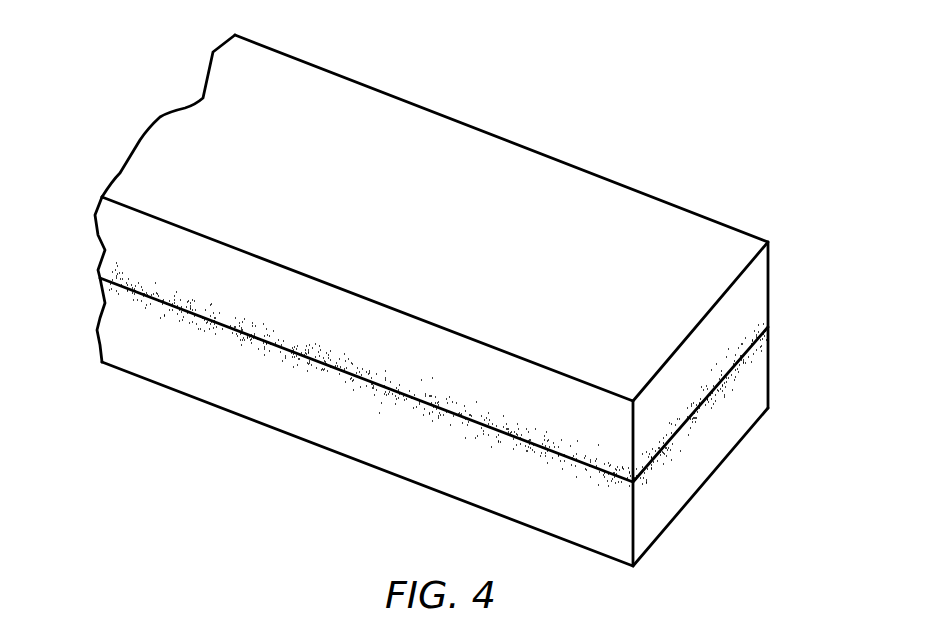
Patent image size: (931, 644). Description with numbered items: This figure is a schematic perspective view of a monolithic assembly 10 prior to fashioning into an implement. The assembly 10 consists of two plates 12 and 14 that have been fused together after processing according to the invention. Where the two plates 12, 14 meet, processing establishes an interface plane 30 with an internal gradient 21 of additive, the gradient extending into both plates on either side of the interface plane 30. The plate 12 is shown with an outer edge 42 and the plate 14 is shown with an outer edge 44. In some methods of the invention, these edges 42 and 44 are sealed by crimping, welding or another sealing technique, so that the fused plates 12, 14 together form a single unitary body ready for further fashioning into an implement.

The monolithic assembly 10 is at (448, 300).
The plate 12 is at (760, 285).
The plate 14 is at (755, 397).
The internal gradient 21 is at (262, 378).
The interface plane 30 is at (100, 279).
The outer edge 42 is at (435, 218).
The outer edge 44 is at (395, 448).